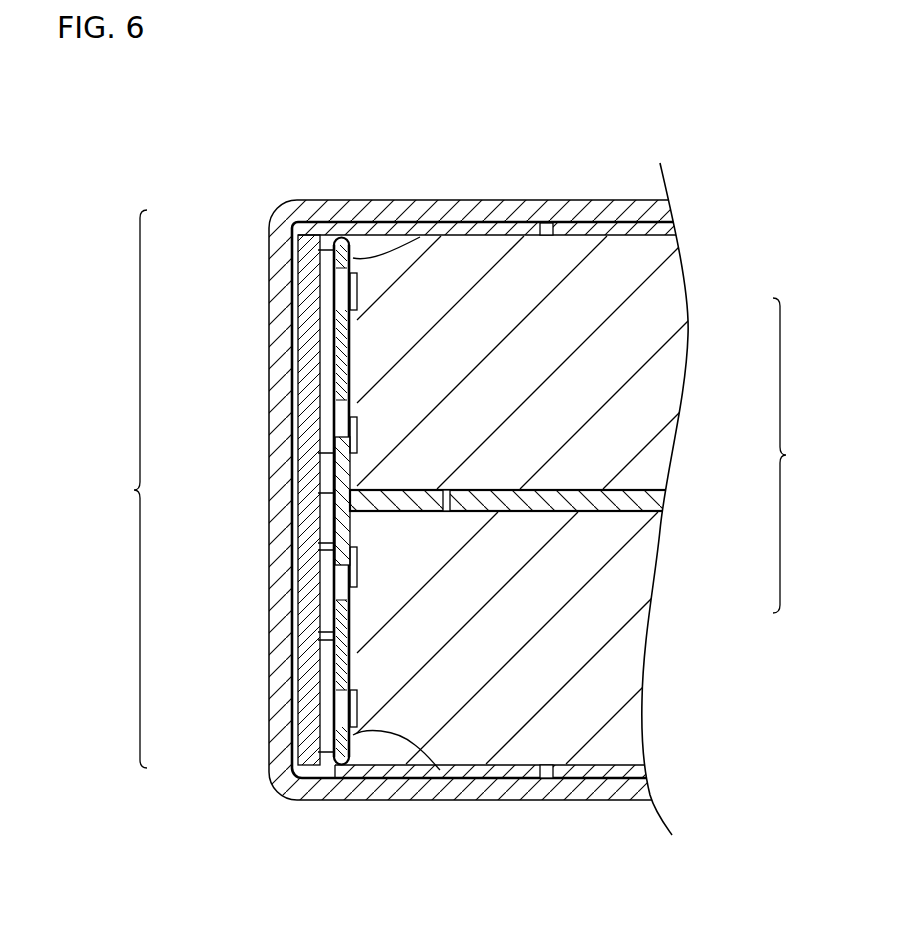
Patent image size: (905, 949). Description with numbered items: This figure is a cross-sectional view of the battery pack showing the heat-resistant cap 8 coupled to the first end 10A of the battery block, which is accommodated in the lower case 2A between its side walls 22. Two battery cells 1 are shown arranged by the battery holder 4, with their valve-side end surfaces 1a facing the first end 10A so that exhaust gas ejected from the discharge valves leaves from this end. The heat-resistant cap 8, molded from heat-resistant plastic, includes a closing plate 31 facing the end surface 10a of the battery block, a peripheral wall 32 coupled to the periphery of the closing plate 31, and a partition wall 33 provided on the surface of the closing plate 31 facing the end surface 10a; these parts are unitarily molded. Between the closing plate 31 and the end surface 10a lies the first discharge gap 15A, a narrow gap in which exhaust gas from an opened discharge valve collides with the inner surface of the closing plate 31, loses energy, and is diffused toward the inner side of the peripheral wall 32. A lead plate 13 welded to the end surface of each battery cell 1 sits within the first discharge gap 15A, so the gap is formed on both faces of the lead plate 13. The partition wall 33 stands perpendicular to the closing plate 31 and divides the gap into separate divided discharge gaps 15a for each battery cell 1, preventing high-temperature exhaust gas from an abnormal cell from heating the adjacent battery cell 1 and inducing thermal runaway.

The first end 10A is at (369, 208).
The lower case 2A is at (463, 514).
The side wall 22 is at (513, 200).
The closing plate 31 is at (308, 412).
The end surface of the battery block 10a is at (332, 479).
The partition wall 33 is at (322, 528).
The lead plate 13 is at (336, 378).
The valve-side end surface 1a is at (345, 352).
The peripheral wall 32 is at (345, 252).
The battery holder 4 is at (392, 512).
The divided discharge gap 15a is at (358, 298).
The battery cell 1 is at (540, 372).
The heat-resistant cap 8 is at (128, 489).
The first discharge gap 15A is at (808, 455).